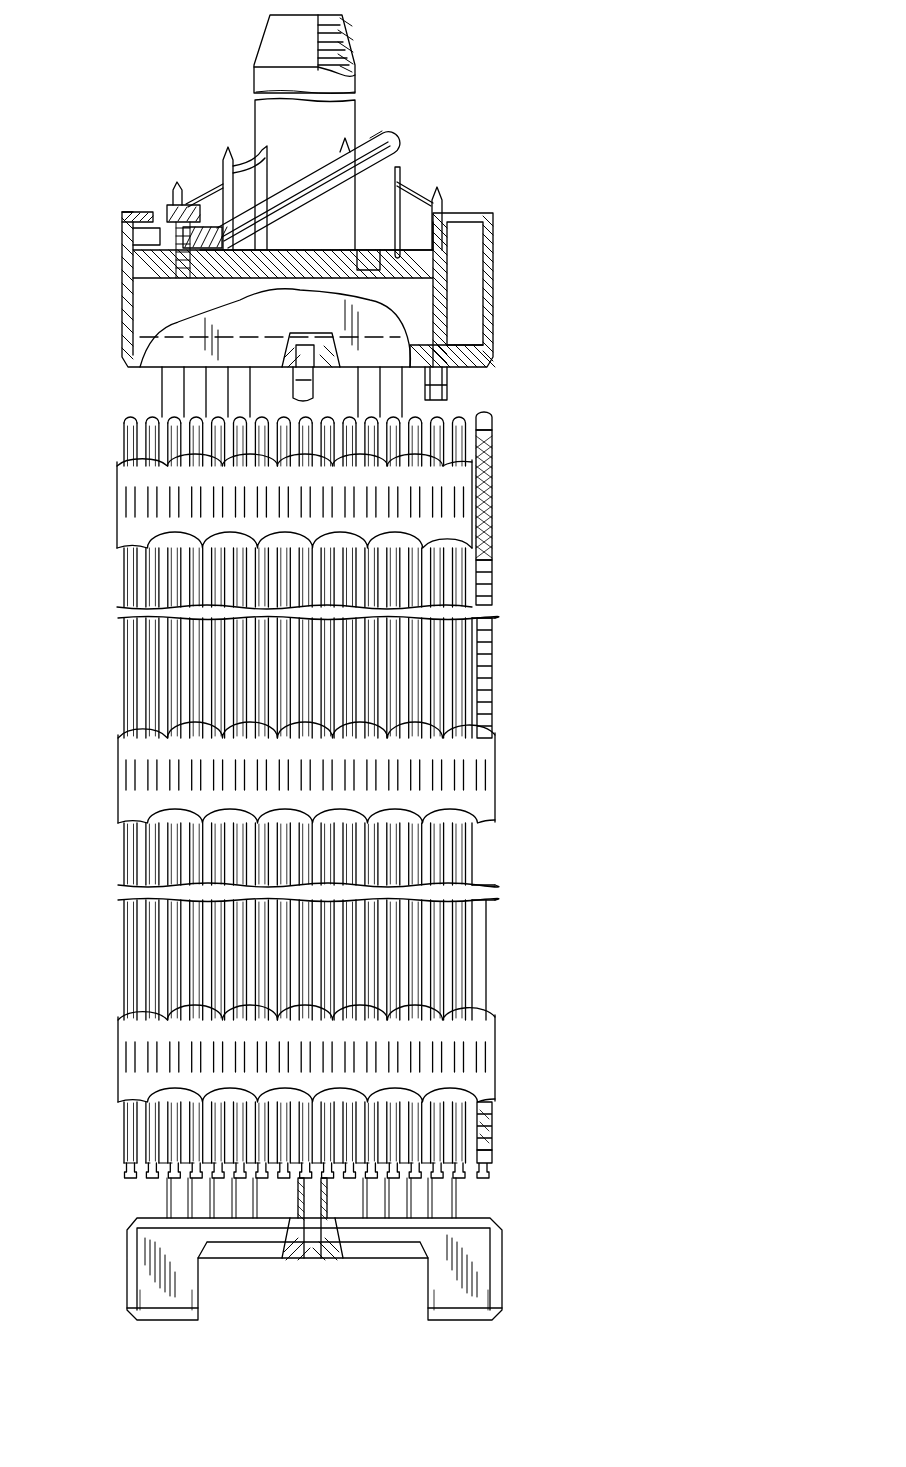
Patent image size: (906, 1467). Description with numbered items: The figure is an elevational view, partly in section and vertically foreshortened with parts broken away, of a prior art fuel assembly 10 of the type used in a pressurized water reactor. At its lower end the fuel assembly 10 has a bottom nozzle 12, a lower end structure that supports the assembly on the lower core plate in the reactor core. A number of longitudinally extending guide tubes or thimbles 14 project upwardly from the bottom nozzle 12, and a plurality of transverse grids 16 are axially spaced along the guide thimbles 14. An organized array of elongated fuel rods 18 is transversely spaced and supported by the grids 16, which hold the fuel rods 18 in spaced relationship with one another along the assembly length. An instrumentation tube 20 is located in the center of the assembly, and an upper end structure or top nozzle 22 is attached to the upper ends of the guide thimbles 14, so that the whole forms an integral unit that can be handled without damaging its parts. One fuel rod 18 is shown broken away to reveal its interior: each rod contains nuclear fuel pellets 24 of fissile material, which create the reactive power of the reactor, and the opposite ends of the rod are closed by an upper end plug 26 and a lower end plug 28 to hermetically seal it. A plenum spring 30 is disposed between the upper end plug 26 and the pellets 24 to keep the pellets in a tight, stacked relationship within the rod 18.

The fuel assembly 10 is at (518, 142).
The bottom nozzle 12 is at (503, 1268).
The guide thimbles 14 is at (168, 394).
The transverse grids 16 is at (118, 502).
The fuel rods 18 is at (126, 574).
The instrumentation tube 20 is at (318, 1238).
The top nozzle 22 is at (496, 280).
The nuclear fuel pellets 24 is at (485, 634).
The upper end plug 26 is at (493, 418).
The lower end plug 28 is at (495, 1160).
The plenum spring 30 is at (496, 486).